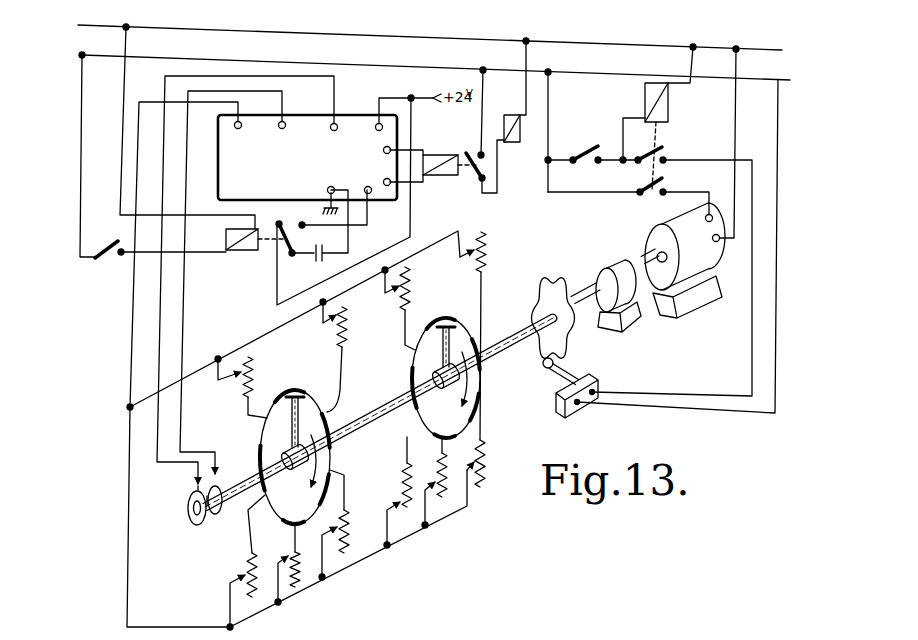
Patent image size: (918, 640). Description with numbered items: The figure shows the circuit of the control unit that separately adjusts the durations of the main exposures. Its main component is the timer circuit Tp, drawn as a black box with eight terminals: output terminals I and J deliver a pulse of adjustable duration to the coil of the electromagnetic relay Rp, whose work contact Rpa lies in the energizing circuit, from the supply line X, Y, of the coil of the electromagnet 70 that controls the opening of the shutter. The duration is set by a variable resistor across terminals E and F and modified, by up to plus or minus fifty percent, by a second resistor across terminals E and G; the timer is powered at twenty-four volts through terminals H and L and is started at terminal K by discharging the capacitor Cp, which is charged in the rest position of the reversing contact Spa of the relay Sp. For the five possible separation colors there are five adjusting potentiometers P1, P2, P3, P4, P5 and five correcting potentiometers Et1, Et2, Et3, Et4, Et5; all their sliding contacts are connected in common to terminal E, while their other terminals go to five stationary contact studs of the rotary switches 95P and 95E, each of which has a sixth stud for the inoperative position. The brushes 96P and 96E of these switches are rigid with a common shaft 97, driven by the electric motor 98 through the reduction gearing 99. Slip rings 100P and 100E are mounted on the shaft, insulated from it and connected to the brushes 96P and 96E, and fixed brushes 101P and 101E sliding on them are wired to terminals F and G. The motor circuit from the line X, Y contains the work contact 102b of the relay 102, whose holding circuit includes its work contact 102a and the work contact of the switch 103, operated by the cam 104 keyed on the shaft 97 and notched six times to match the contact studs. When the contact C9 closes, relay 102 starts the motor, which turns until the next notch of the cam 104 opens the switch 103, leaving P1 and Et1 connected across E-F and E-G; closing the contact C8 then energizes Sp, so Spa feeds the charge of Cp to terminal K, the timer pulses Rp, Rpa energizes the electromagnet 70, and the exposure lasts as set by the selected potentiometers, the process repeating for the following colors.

The supply line X is at (420, 34).
The supply line Y is at (423, 63).
The electromagnet 70 is at (516, 144).
The electric motor 98 is at (713, 255).
The reduction gearing 99 is at (635, 320).
The relay 102 is at (667, 100).
The work contact 102a is at (662, 147).
The work contact 102b is at (663, 177).
The switch 103 is at (598, 380).
The cam 104 is at (557, 287).
The shaft 97 is at (520, 337).
The brush 96P is at (452, 326).
The rotary switch 95P is at (478, 383).
The brush 96E is at (282, 397).
The rotary switch 95E is at (333, 457).
The slip ring 100E is at (190, 512).
The slip ring 100P is at (212, 518).
The fixed brush 101E is at (195, 473).
The fixed brush 101P is at (217, 476).
The adjusting potentiometer P1 is at (484, 252).
The adjusting potentiometer P2 is at (482, 486).
The adjusting potentiometer P3 is at (444, 497).
The adjusting potentiometer P4 is at (405, 510).
The adjusting potentiometer P5 is at (410, 290).
The correcting potentiometer Et1 is at (345, 307).
The correcting potentiometer Et2 is at (346, 553).
The correcting potentiometer Et3 is at (297, 587).
The correcting potentiometer Et4 is at (252, 590).
The correcting potentiometer Et5 is at (258, 352).
The relay Sp is at (248, 245).
The reversing contact Spa is at (283, 241).
The capacitor Cp is at (320, 237).
The electromagnetic relay Rp is at (432, 160).
The work contact Rpa is at (477, 173).
The contact C8 is at (108, 262).
The contact C9 is at (574, 142).
The timer circuit Tp is at (325, 114).